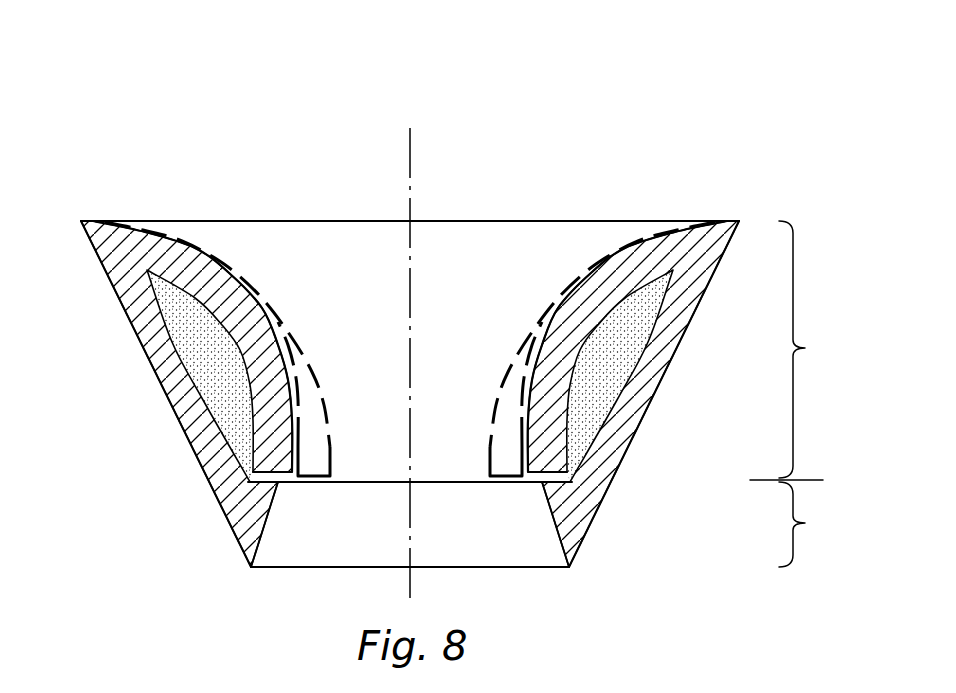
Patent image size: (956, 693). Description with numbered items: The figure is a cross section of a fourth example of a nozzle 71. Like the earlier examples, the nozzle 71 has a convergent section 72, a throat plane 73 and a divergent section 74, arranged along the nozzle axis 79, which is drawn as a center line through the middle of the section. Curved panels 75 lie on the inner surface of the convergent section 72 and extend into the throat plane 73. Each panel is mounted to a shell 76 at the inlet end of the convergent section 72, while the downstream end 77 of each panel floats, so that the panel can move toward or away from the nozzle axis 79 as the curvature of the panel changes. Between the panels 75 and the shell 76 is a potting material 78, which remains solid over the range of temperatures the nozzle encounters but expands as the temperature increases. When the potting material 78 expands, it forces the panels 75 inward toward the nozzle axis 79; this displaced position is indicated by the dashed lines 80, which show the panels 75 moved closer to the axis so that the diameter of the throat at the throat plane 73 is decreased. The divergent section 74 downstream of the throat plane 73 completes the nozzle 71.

The nozzle 71 is at (115, 143).
The convergent section 72 is at (814, 349).
The throat plane 73 is at (806, 480).
The divergent section 74 is at (816, 524).
The curved panels 75 is at (215, 277).
The shell 76 is at (148, 322).
The downstream end 77 is at (225, 508).
The potting material 78 is at (203, 372).
The nozzle axis 79 is at (411, 160).
The dashed lines 80 is at (280, 317).